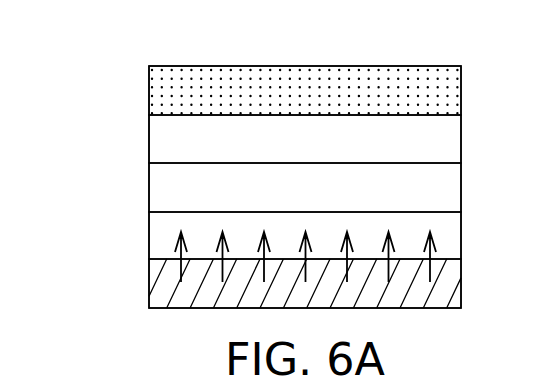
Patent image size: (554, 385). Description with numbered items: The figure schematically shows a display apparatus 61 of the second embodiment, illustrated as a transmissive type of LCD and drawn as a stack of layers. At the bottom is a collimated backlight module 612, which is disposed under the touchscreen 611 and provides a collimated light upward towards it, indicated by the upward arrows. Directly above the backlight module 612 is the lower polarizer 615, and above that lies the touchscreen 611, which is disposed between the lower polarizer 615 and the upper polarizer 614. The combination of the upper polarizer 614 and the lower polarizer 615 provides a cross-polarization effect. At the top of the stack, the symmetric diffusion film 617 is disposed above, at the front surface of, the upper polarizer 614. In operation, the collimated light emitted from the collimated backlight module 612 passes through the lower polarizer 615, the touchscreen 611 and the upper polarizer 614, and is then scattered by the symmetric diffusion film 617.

The display apparatus 61 is at (58, 50).
The symmetric diffusion film 617 is at (461, 88).
The upper polarizer 614 is at (461, 137).
The touchscreen 611 is at (461, 185).
The lower polarizer 615 is at (461, 234).
The collimated backlight module 612 is at (461, 283).